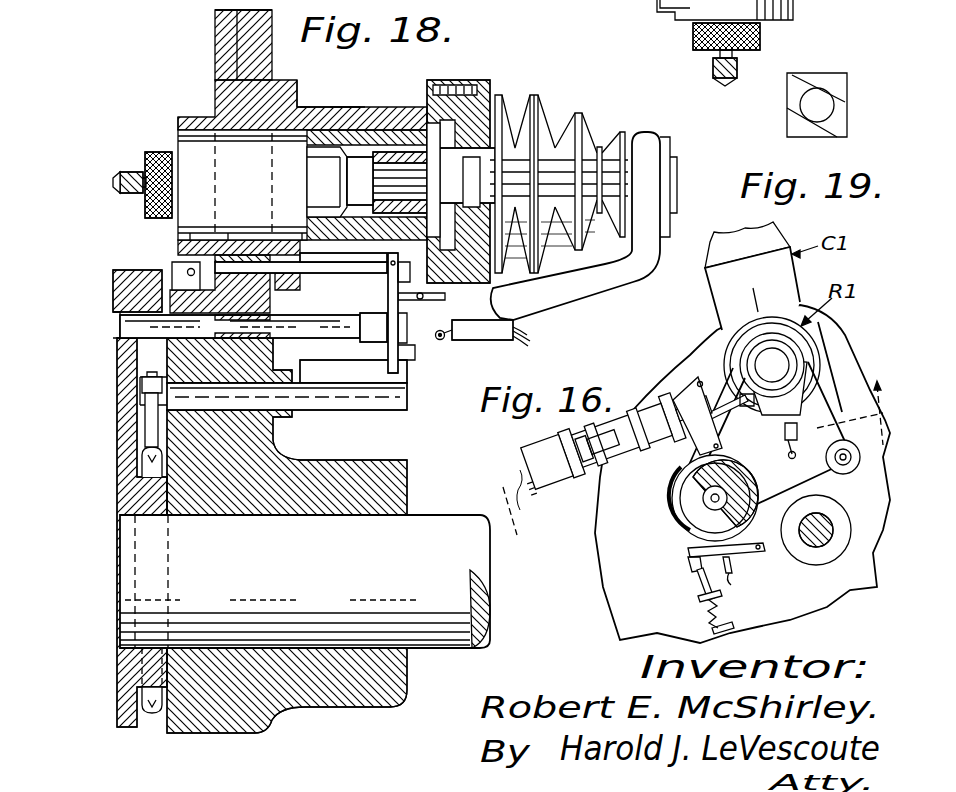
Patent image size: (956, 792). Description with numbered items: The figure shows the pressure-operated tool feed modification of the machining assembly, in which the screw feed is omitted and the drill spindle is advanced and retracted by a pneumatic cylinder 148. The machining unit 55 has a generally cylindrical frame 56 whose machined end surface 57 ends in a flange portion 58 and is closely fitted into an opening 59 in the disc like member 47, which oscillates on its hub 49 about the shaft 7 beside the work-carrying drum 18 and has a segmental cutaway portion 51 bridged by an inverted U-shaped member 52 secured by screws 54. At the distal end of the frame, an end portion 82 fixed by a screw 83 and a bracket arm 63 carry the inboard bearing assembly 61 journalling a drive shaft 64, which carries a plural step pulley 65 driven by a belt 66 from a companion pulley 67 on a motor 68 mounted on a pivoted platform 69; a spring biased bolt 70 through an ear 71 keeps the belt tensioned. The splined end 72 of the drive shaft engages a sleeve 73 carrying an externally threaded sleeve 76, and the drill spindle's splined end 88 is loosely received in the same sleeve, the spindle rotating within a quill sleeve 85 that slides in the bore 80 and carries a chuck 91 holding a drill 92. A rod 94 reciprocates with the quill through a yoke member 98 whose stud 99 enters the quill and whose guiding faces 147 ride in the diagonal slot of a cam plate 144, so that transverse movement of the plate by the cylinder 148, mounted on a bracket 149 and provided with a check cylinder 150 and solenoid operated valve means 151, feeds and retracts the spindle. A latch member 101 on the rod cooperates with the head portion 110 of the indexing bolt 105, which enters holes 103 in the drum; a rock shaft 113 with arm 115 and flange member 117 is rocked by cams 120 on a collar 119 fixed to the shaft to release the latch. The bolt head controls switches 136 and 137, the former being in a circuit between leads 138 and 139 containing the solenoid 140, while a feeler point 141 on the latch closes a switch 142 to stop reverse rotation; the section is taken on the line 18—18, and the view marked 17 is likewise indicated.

In FIG. 18, the shaft 7 is at (400, 570).
In FIG. 16, the shaft 7 is at (824, 541).
In FIG. 16, the section line 17 is at (516, 500).
In FIG. 18, the drum 18 is at (121, 266).
In FIG. 16, the drum 18 is at (778, 293).
In FIG. 18, the disc like member 47 is at (250, 729).
In FIG. 18, the hub 49 is at (372, 704).
In FIG. 16, the hub 49 is at (813, 568).
In FIG. 16, the cutaway portion 51 is at (830, 342).
In FIG. 18, the inverted U-shaped member 52 is at (215, 44).
In FIG. 18, the screws 54 is at (215, 23).
In FIG. 18, the machining unit 55 is at (320, 108).
In FIG. 18, the frame 56 is at (337, 113).
In FIG. 16, the frame 56 is at (778, 236).
In FIG. 18, the external cylindrical machined surface 57 is at (190, 117).
In FIG. 18, the flange portion 58 is at (307, 103).
In FIG. 18, the opening 59 is at (207, 117).
In FIG. 18, the inboard bearing assembly 61 is at (470, 157).
In FIG. 18, the bracket arm 63 is at (603, 291).
In FIG. 16, the bracket arm 63 is at (792, 390).
In FIG. 18, the drive shaft 64 is at (492, 177).
In FIG. 18, the plural step pulley 65 is at (582, 121).
In FIG. 16, the plural step pulley 65 is at (815, 349).
In FIG. 16, the belt 66 is at (839, 476).
In FIG. 16, the companion pulley 67 is at (688, 549).
In FIG. 16, the motor 68 is at (690, 523).
In FIG. 16, the pivoted platform 69 is at (731, 561).
In FIG. 16, the spring biased bolt 70 is at (698, 581).
In FIG. 16, the ear 71 is at (698, 603).
In FIG. 18, the splined end 72 is at (372, 205).
In FIG. 18, the sleeve 73 is at (393, 163).
In FIG. 18, the externally threaded sleeve 76 is at (406, 160).
In FIG. 18, the bore 80 is at (373, 107).
In FIG. 18, the end portion 82 is at (491, 84).
In FIG. 18, the screw 83 is at (466, 90).
In FIG. 18, the quill sleeve 85 is at (255, 167).
In FIG. 18, the splined end 88 is at (327, 182).
In FIG. 18, the chuck 91 is at (158, 147).
In FIG. 19, the chuck 91 is at (689, 35).
In FIG. 18, the drill 92 is at (128, 170).
In FIG. 19, the drill 92 is at (713, 70).
In FIG. 18, the rod 94 is at (311, 274).
In FIG. 18, the yoke member 98 is at (398, 273).
In FIG. 19, the yoke member 98 is at (787, 117).
In FIG. 19, the stud 99 is at (822, 109).
In FIG. 18, the latch member 101 is at (405, 355).
In FIG. 18, the holes 103 is at (139, 280).
In FIG. 18, the plunger or bolt 105 is at (298, 330).
In FIG. 18, the head portion 110 is at (368, 345).
In FIG. 18, the rock shaft 113 is at (378, 411).
In FIG. 16, the rock shaft 113 is at (786, 447).
In FIG. 18, the arm 115 is at (156, 432).
In FIG. 18, the flange member 117 is at (405, 383).
In FIG. 18, the collar 119 is at (158, 521).
In FIG. 18, the cams 120 is at (165, 458).
In FIG. 18, the switch 136 is at (520, 343).
In FIG. 18, the switch 137 is at (440, 340).
In FIG. 18, the lead 138 is at (229, 233).
In FIG. 18, the lead 139 is at (192, 233).
In FIG. 18, the solenoid 140 is at (303, 233).
In FIG. 18, the feeler point 141 is at (388, 297).
In FIG. 18, the switch 142 is at (420, 303).
In FIG. 16, the cam plate 144 is at (745, 408).
In FIG. 18, the guiding faces 147 is at (380, 257).
In FIG. 19, the guiding faces 147 is at (825, 79).
In FIG. 16, the pneumatic cylinder 148 is at (668, 480).
In FIG. 16, the bracket 149 is at (680, 388).
In FIG. 16, the check cylinder 150 is at (647, 471).
In FIG. 16, the solenoid operated valve means 151 is at (533, 450).